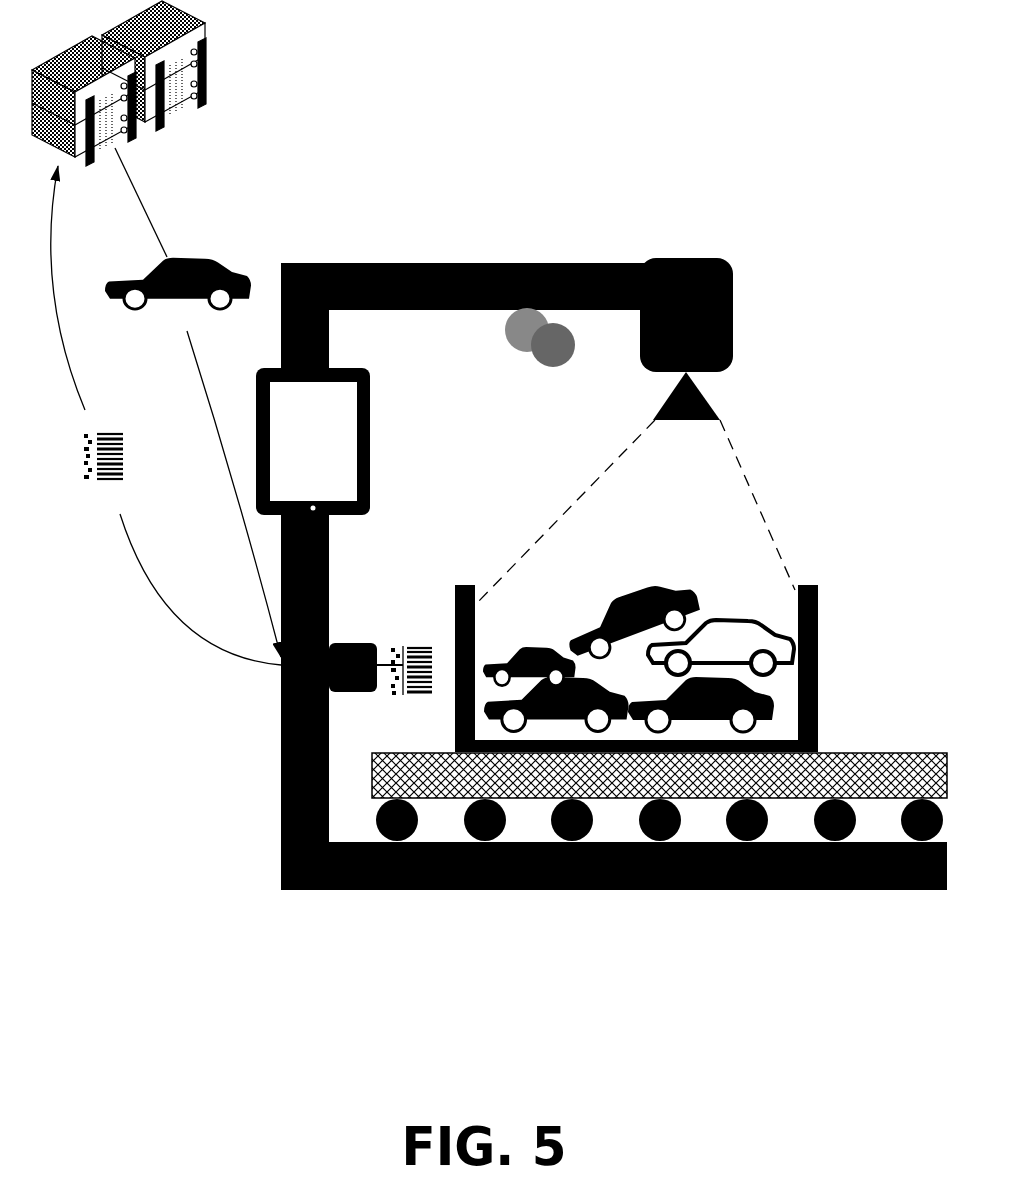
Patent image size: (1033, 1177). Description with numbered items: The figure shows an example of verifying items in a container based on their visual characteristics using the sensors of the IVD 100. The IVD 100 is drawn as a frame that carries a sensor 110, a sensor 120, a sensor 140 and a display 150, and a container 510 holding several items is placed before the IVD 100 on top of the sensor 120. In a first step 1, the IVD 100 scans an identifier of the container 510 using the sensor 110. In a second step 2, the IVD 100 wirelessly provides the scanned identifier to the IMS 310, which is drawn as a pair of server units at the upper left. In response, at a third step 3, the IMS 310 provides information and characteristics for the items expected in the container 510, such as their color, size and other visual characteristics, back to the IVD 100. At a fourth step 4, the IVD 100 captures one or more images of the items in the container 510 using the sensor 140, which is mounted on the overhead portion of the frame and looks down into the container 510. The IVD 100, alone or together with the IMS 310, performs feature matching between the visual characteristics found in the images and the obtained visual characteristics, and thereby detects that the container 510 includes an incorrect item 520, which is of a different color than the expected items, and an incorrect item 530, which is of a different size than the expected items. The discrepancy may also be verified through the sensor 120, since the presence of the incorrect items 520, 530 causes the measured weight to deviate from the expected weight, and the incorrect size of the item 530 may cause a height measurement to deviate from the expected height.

The IVD 100 is at (561, 228).
The sensor 110 is at (353, 634).
The sensor 120 is at (857, 810).
The sensor 140 is at (739, 322).
The display 150 is at (376, 426).
The IMS 310 is at (207, 62).
The container 510 is at (820, 585).
The incorrect item 520 is at (727, 623).
The incorrect item 530 is at (536, 645).
The scanning step 1 is at (405, 656).
The identifier transmission step 2 is at (166, 415).
The information provision step 3 is at (193, 402).
The image capture step 4 is at (636, 487).